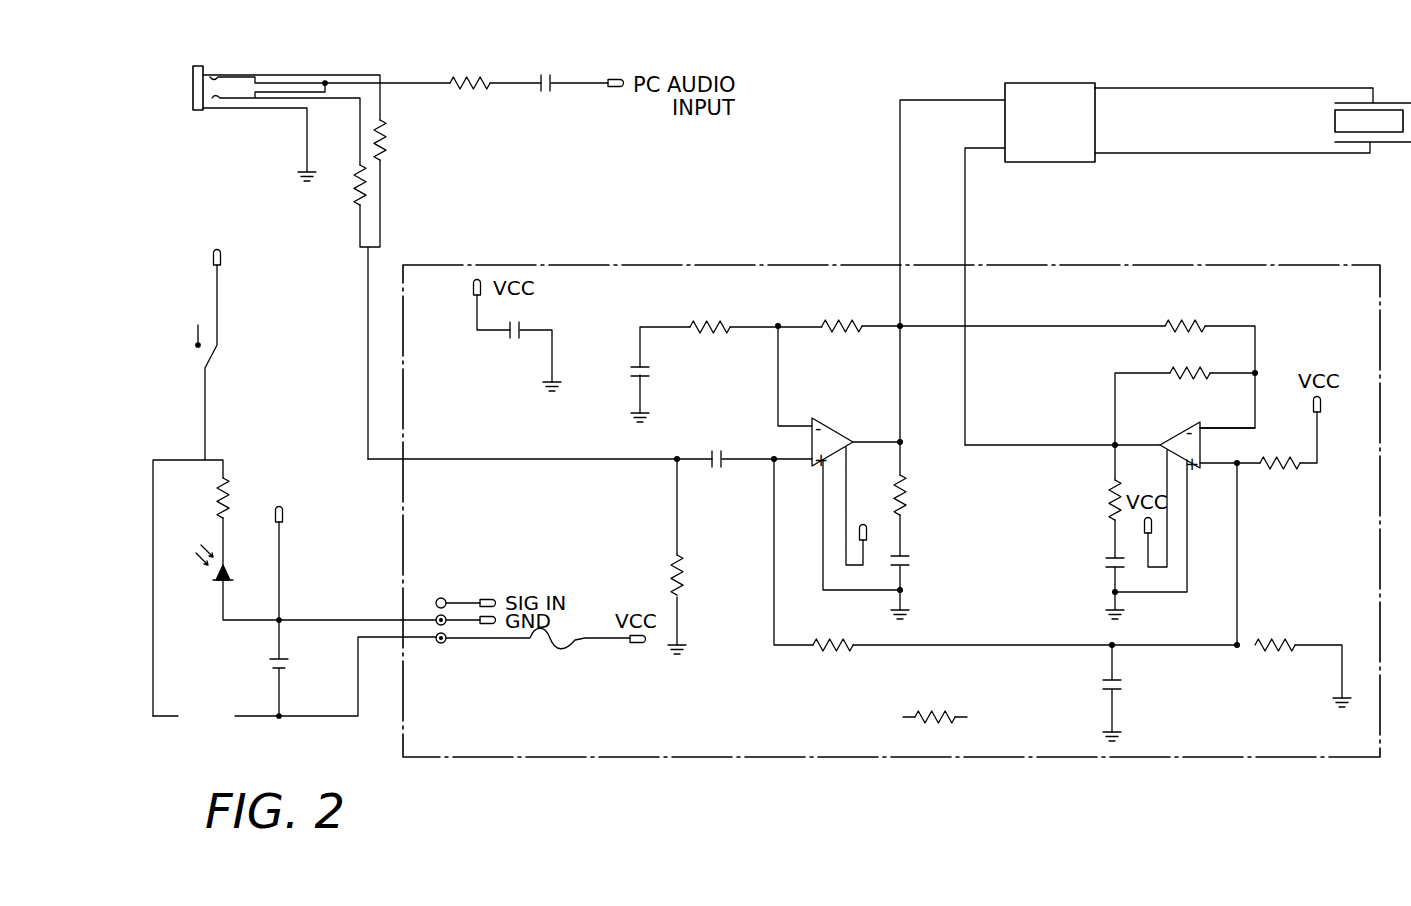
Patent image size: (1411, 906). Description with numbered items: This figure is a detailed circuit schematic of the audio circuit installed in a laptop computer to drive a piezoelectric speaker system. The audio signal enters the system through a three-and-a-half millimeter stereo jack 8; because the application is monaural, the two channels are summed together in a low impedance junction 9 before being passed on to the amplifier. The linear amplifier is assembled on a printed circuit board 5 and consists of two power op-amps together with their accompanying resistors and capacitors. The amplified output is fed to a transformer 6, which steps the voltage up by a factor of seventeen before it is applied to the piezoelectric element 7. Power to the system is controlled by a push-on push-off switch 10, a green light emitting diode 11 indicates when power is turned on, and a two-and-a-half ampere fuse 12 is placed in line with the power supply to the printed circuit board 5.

The printed circuit board 5 is at (833, 758).
The transformer 6 is at (1058, 83).
The piezoelectric element 7 is at (1388, 103).
The stereo jack 8 is at (336, 75).
The low impedance junction 9 is at (396, 163).
The push-on push-off switch 10 is at (190, 336).
The green light emitting diode 11 is at (216, 584).
The fuse 12 is at (233, 716).